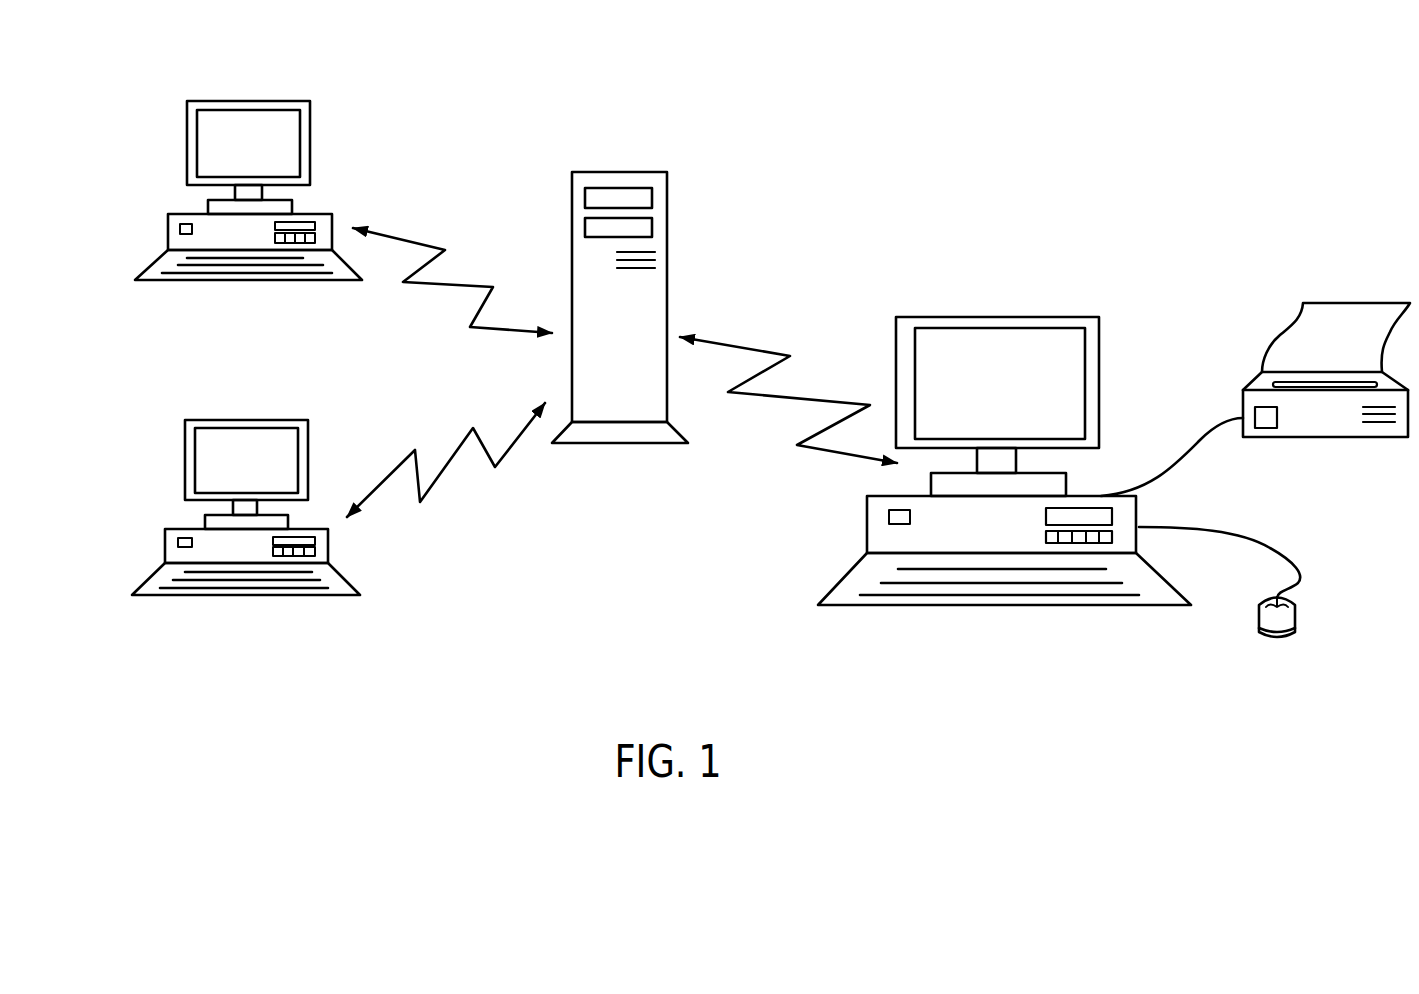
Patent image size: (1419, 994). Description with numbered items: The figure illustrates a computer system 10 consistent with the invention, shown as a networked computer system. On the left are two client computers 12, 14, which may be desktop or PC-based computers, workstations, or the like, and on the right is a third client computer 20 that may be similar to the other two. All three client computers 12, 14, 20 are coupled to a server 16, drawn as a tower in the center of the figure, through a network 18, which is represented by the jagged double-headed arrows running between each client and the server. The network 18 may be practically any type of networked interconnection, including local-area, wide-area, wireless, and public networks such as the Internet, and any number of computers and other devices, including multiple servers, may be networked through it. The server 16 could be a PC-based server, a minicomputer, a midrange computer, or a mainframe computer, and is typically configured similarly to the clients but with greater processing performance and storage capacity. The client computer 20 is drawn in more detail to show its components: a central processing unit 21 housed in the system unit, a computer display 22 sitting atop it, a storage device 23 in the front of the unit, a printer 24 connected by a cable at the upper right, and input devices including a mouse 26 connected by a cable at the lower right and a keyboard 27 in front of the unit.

The computer system 10 is at (923, 143).
The client computer 12 is at (242, 100).
The client computer 14 is at (253, 418).
The server 16 is at (593, 172).
The network 18 is at (460, 287).
The client computer 20 is at (990, 439).
The central processing unit 21 is at (880, 538).
The computer display 22 is at (953, 322).
The storage device 23 is at (1073, 545).
The printer 24 is at (1262, 385).
The mouse 26 is at (1285, 623).
The keyboard 27 is at (847, 598).